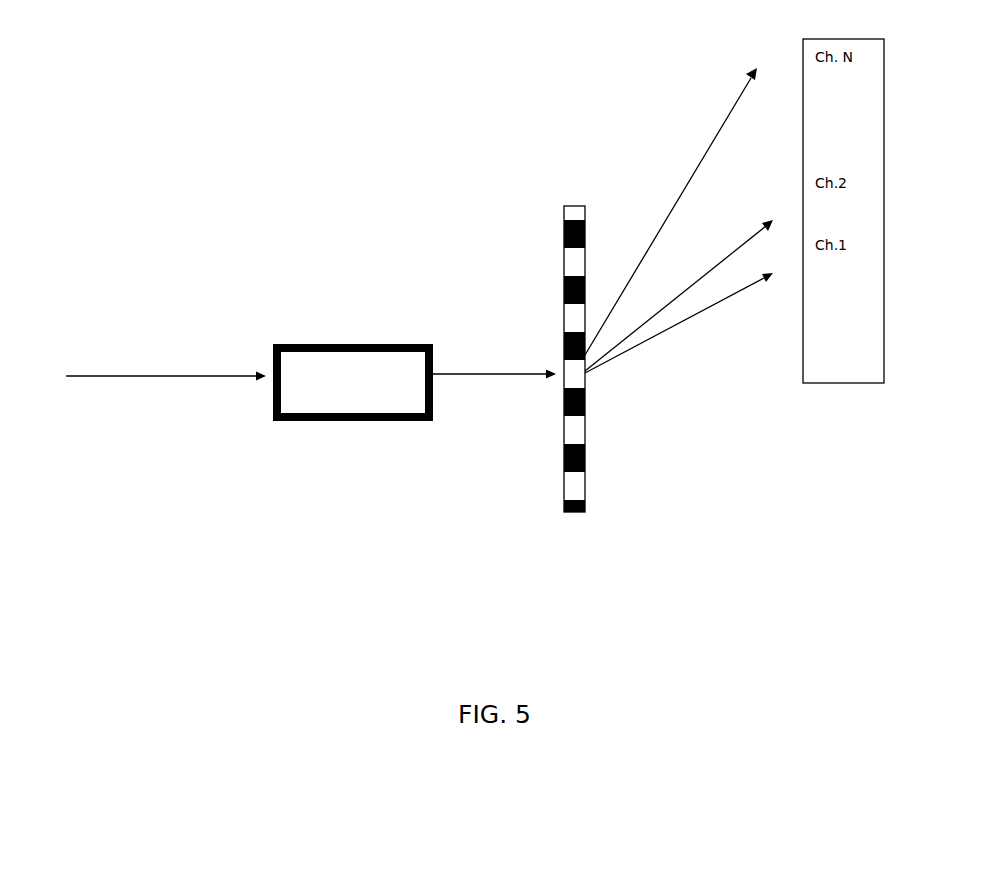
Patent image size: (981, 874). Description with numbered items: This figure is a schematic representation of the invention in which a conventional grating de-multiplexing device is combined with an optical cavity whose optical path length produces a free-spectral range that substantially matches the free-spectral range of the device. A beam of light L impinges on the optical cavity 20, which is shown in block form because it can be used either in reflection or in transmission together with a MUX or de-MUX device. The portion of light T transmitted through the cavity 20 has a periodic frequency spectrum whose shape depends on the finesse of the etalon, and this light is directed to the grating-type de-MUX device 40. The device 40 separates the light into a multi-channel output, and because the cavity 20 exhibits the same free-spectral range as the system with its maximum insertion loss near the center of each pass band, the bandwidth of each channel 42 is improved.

The beam of light L is at (192, 377).
The optical cavity 20 is at (355, 343).
The transmitted portion of light T is at (447, 373).
The grating-type de-MUX device 40 is at (585, 207).
The channel 42 is at (684, 317).